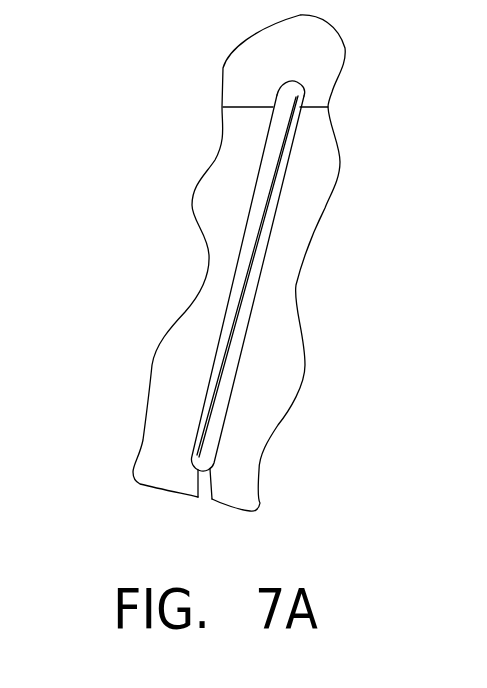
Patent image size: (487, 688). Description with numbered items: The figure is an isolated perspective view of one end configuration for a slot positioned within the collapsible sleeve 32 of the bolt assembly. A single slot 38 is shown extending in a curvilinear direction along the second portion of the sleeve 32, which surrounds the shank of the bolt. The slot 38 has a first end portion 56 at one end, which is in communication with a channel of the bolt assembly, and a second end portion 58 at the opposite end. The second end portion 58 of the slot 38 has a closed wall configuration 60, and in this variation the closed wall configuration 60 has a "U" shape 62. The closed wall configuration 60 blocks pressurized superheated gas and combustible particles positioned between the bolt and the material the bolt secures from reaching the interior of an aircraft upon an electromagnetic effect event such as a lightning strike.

The sleeve 32 is at (242, 461).
The slot 38 is at (257, 212).
The first end portion 56 is at (308, 92).
The second end portion 58 is at (210, 435).
The closed wall configuration 60 is at (212, 495).
The "U" shape 62 is at (203, 481).